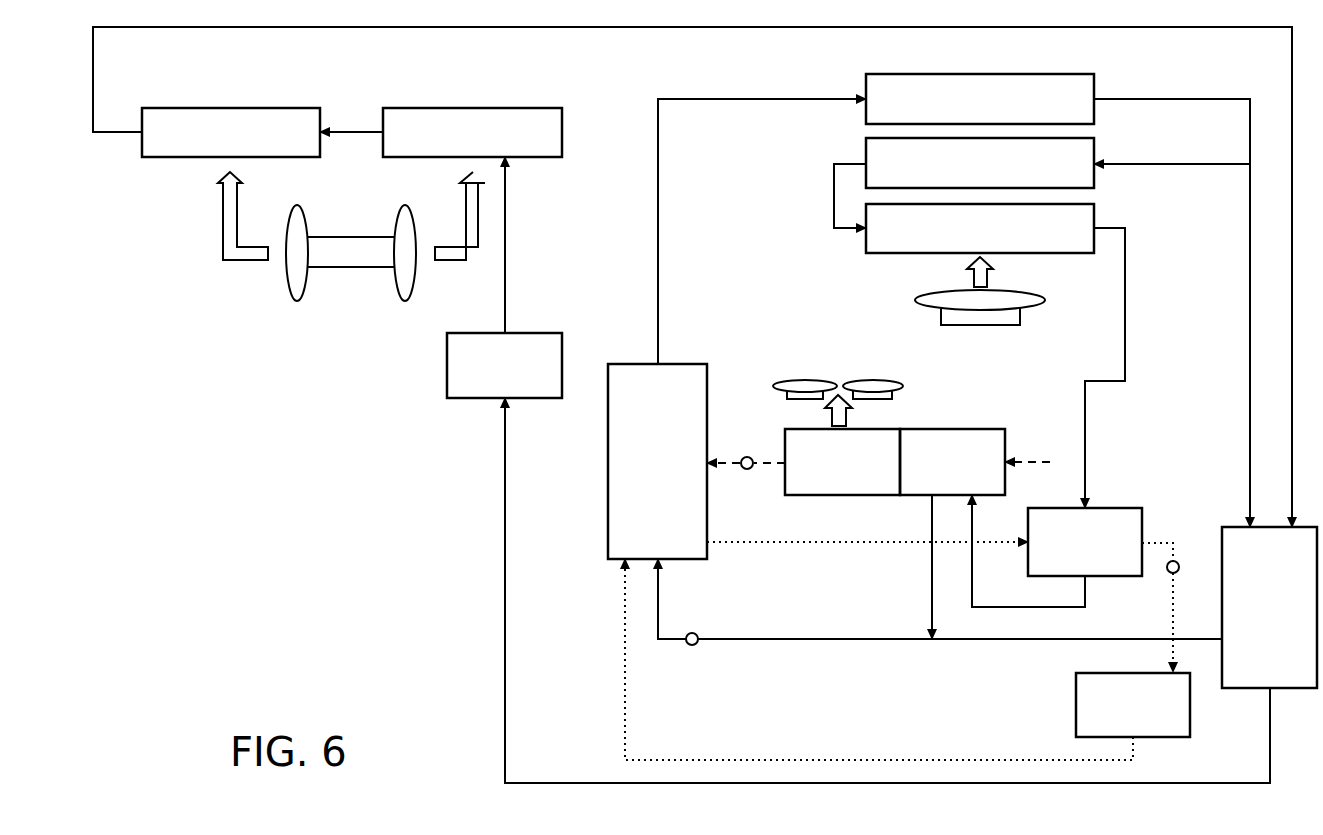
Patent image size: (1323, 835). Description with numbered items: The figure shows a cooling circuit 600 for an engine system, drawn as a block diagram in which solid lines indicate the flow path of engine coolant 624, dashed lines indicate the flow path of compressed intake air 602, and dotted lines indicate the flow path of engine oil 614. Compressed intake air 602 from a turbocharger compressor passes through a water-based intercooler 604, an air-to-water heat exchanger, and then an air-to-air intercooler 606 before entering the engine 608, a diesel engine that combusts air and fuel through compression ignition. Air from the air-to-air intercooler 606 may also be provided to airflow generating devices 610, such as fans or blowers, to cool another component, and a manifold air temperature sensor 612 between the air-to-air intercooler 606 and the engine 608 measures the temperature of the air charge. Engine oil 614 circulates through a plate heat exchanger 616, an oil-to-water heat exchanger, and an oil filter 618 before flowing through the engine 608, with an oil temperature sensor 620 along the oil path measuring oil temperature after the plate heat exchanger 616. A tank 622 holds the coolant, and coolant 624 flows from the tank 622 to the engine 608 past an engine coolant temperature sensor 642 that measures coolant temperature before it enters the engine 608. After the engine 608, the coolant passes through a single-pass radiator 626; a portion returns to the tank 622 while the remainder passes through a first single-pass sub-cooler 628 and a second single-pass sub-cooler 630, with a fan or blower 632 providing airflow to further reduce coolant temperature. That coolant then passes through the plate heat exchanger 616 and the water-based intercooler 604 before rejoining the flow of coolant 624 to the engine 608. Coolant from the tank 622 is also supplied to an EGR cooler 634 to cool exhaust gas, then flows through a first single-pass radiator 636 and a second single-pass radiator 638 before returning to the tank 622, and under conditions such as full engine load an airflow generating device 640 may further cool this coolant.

The cooling circuit 600 is at (412, 647).
The compressed intake air 602 is at (1022, 460).
The water-based intercooler 604 is at (952, 462).
The air-to-air intercooler 606 is at (842, 445).
The engine 608 is at (657, 461).
The airflow generating devices 610 is at (803, 379).
The manifold air temperature sensor 612 is at (747, 457).
The engine oil 614 is at (1026, 540).
The plate heat exchanger 616 is at (1085, 542).
The oil filter 618 is at (907, 659).
The oil temperature sensor 620 is at (1178, 562).
The tank 622 is at (1269, 607).
The engine coolant 624 is at (1085, 638).
The single-pass radiator 626 is at (980, 99).
The first single-pass sub-cooler 628 is at (980, 163).
The second single-pass sub-cooler 630 is at (980, 228).
The fan or blower 632 is at (980, 326).
The EGR cooler 634 is at (504, 365).
The first single-pass radiator 636 is at (472, 132).
The second single-pass radiator 638 is at (231, 132).
The airflow generating device 640 is at (363, 268).
The engine coolant temperature sensor 642 is at (691, 632).